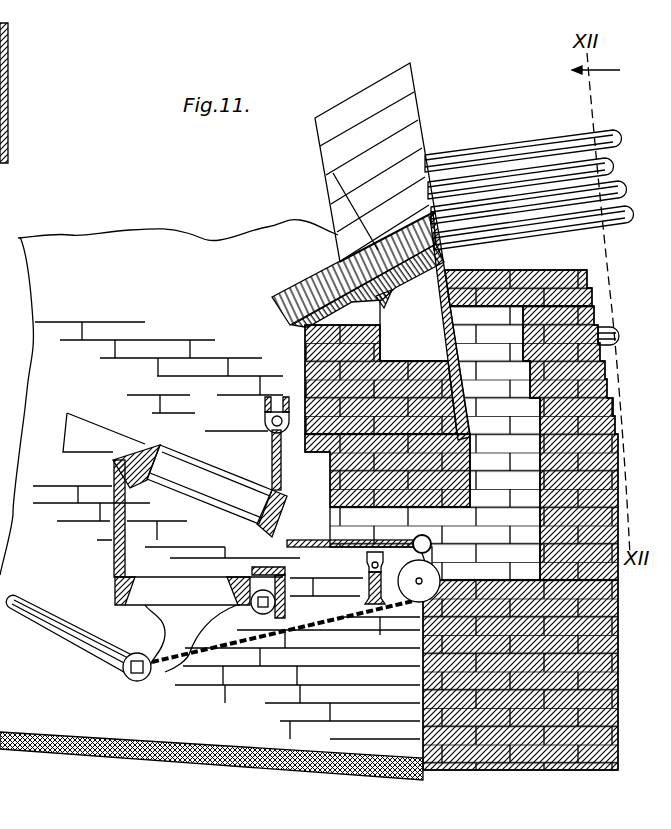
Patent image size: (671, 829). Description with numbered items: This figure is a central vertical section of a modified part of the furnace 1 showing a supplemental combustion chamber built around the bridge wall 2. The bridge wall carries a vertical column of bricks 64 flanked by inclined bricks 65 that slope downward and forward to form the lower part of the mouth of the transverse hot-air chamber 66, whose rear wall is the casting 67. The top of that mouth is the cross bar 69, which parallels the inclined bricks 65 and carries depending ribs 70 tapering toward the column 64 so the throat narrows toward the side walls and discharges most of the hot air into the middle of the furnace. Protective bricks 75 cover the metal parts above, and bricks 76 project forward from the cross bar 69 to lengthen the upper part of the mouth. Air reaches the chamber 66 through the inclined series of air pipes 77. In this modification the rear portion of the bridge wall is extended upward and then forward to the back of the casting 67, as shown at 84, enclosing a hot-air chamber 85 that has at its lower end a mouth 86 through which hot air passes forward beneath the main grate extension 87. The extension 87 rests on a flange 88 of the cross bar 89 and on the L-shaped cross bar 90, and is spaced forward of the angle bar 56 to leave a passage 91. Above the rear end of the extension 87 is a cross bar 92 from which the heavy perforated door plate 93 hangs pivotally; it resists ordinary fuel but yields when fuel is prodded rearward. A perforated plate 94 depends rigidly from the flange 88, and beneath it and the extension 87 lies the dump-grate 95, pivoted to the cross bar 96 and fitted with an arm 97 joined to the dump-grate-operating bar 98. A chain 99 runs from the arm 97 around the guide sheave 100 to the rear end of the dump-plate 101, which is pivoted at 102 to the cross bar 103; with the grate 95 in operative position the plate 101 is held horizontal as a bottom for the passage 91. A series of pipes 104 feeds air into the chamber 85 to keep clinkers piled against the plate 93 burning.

The furnace 1 is at (114, 240).
The bridge wall 2 is at (420, 702).
The angle bar 56 is at (333, 473).
The vertical column of bricks 64 is at (306, 337).
The inclined bricks 65 is at (304, 382).
The transverse hot-air chamber 66 is at (425, 326).
The casting 67 is at (456, 338).
The cross bar 69 is at (300, 289).
The depending ribs 70 is at (384, 304).
The bricks 75 is at (335, 215).
The bricks 76 is at (310, 273).
The air pipes 77 is at (556, 125).
The upward and forward extension of the bridge wall 84 is at (588, 284).
The hot-air chamber 85 is at (435, 443).
The mouth 86 is at (432, 545).
The main grate extension 87 is at (180, 470).
The flange 88 is at (144, 481).
The cross bar 89 is at (147, 440).
The L-shaped cross bar 90 is at (258, 537).
The passage 91 is at (281, 492).
The cross bar 92 is at (270, 397).
The perforated door plate 93 is at (270, 436).
The perforated plate 94 is at (114, 475).
The dump-grate 95 is at (115, 588).
The cross bar 96 is at (285, 594).
The arm 97 is at (152, 678).
The dump-grate-operating bar 98 is at (80, 642).
The chain 99 is at (275, 628).
The guide sheave 100 is at (440, 572).
The dump-plate 101 is at (305, 541).
The pivot 102 is at (367, 562).
The cross bar 103 is at (372, 606).
The pipes 104 is at (612, 347).